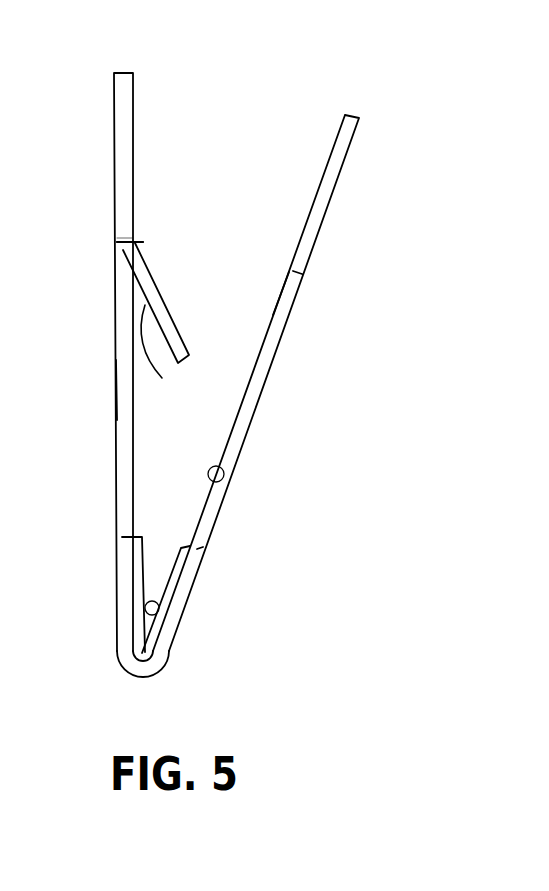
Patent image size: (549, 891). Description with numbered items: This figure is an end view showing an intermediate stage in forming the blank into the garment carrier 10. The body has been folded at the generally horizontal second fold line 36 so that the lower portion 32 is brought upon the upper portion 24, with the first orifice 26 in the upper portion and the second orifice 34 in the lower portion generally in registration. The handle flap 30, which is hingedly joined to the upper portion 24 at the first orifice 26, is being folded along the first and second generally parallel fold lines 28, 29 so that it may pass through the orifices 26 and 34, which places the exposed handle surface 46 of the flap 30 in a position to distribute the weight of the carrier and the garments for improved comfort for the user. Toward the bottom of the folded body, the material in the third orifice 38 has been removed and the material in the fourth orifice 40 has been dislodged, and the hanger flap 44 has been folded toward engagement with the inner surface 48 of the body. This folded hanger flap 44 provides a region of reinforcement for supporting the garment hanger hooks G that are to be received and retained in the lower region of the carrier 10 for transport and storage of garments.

The garment carrier 10 is at (230, 393).
The upper portion 24 is at (125, 113).
The first orifice 26 is at (130, 382).
The first fold line 28 is at (147, 242).
The second fold line 29 is at (128, 237).
The handle flap 30 is at (167, 303).
The lower portion 32 is at (340, 151).
The second orifice 34 is at (278, 327).
The second fold line 36 is at (138, 687).
The third orifice 38 is at (227, 599).
The fourth orifice 40 is at (190, 576).
The hanger flap 44 is at (138, 548).
The exposed handle surface 46 is at (160, 358).
The inner surface 48 is at (221, 486).
The hanger hooks G is at (146, 606).